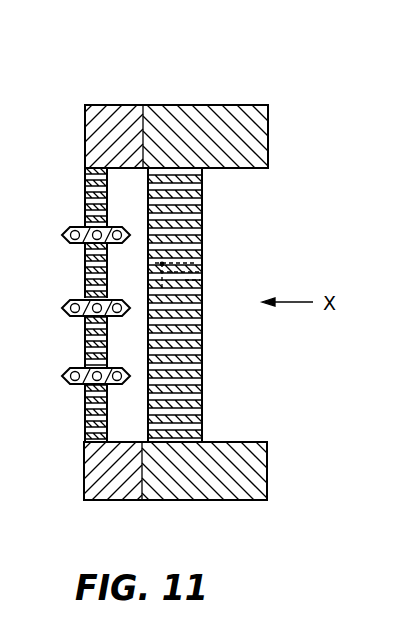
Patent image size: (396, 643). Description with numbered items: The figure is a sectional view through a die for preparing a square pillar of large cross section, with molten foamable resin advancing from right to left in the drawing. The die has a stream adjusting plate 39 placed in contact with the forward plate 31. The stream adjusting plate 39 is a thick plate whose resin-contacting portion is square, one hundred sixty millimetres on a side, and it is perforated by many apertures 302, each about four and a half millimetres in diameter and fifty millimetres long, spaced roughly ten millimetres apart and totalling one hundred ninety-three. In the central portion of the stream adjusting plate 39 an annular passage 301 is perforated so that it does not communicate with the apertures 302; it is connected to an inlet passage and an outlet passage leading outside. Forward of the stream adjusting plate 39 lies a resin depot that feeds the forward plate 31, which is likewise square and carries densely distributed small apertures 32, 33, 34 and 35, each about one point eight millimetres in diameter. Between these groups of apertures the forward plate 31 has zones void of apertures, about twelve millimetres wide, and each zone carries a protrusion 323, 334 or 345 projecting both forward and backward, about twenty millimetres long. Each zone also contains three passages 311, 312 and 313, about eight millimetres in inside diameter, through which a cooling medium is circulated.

The forward plate 31 is at (108, 105).
The stream adjusting plate 39 is at (169, 168).
The aperture 32 is at (85, 203).
The aperture 33 is at (83, 275).
The aperture 34 is at (83, 345).
The aperture 35 is at (85, 434).
The protrusion 323 is at (68, 228).
The protrusion 334 is at (70, 300).
The protrusion 345 is at (72, 372).
The aperture 302 is at (202, 208).
The annular passage 301 is at (203, 270).
The passage 311 is at (118, 382).
The passage 312 is at (85, 410).
The passage 313 is at (78, 381).